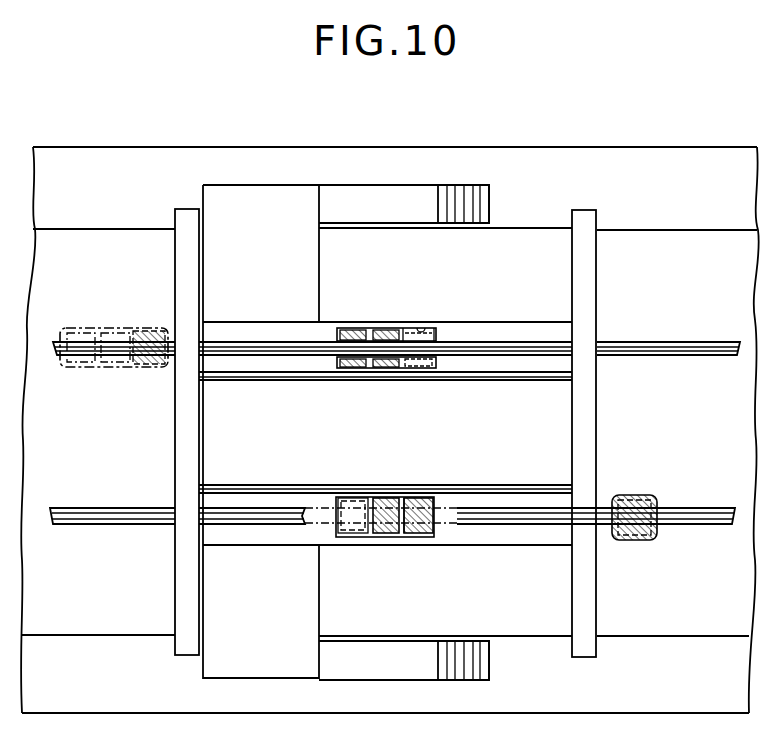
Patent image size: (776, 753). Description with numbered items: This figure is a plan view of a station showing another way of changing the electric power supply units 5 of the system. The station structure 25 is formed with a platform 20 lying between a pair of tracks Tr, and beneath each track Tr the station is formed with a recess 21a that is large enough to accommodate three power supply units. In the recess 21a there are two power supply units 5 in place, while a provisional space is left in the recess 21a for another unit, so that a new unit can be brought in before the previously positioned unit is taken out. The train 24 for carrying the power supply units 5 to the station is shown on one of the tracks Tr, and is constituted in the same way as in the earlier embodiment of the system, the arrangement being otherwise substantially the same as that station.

The electric power supply unit 5 is at (352, 328).
The platform 20 is at (262, 471).
The recess 21a is at (422, 328).
The train 24 is at (83, 368).
The station structure 25 is at (175, 648).
The track Tr is at (687, 342).